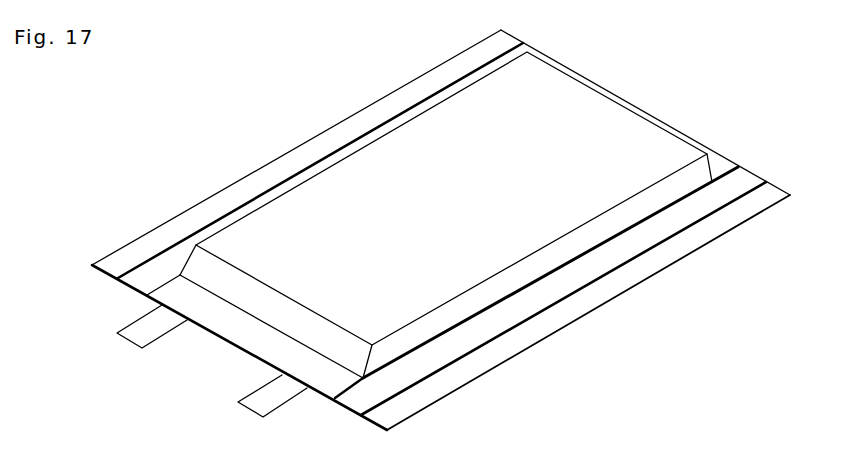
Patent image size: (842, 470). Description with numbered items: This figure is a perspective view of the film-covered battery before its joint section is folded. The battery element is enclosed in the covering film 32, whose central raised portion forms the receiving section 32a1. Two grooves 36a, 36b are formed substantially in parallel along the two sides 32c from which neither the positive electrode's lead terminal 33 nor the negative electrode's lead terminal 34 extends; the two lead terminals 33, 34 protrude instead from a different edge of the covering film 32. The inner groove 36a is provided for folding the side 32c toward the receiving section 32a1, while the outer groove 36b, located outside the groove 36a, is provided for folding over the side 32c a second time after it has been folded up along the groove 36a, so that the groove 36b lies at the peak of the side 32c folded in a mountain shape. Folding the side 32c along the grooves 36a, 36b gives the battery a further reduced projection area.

The covering film 32 is at (372, 118).
The receiving section 32a1 is at (592, 108).
The side 32c is at (617, 282).
The positive electrode's lead terminal 33 is at (262, 400).
The negative electrode's lead terminal 34 is at (140, 334).
The groove 36a is at (155, 292).
The groove 36b is at (162, 252).